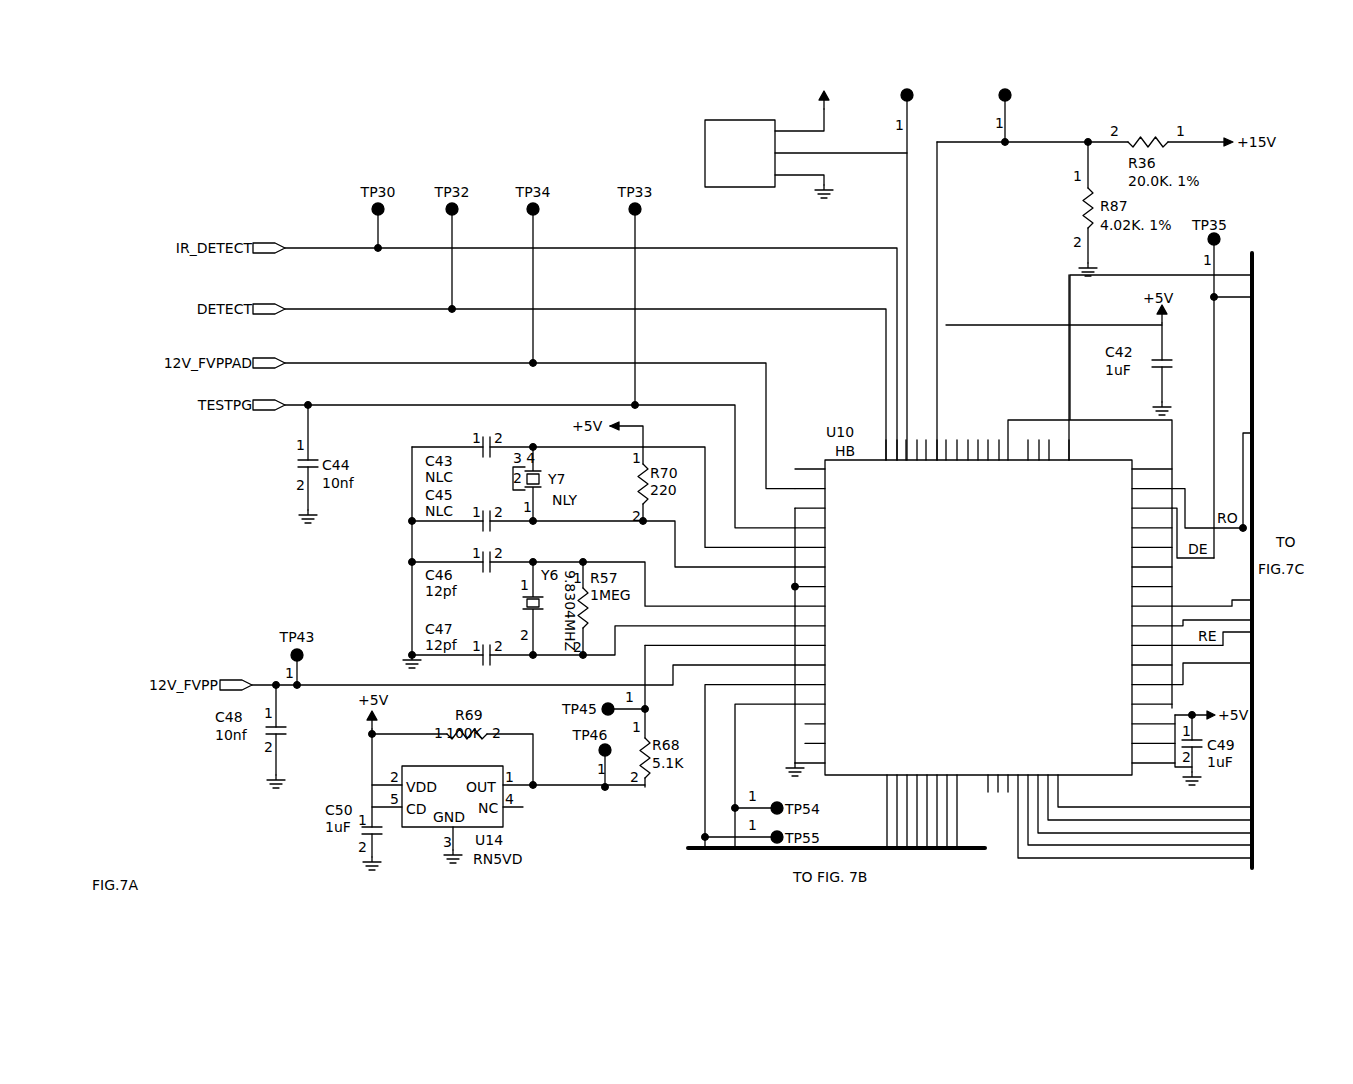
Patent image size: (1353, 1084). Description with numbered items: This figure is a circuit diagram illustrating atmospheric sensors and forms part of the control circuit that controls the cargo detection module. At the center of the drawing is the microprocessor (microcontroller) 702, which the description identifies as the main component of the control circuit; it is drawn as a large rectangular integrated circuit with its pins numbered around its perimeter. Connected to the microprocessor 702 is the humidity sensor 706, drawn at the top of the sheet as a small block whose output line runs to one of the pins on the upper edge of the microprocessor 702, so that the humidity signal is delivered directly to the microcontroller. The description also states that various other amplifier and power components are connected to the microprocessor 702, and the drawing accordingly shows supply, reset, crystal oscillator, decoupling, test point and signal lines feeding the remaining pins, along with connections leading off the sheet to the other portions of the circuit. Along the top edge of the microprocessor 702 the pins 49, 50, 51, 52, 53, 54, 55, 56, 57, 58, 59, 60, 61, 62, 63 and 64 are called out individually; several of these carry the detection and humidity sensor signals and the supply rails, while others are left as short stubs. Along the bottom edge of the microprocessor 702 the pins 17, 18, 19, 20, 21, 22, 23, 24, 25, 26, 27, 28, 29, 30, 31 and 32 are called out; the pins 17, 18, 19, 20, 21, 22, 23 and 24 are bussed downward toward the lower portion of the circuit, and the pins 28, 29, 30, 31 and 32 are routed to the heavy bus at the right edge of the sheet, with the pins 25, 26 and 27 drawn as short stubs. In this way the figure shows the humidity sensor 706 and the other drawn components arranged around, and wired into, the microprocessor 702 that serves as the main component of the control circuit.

The microprocessor (microcontroller) 702 is at (1004, 623).
The humidity sensor 706 is at (705, 146).
The microcontroller pin 17 is at (887, 787).
The microcontroller pin 18 is at (897, 805).
The microcontroller pin 19 is at (907, 823).
The microcontroller pin 20 is at (917, 841).
The microcontroller pin 21 is at (927, 787).
The microcontroller pin 22 is at (937, 805).
The microcontroller pin 23 is at (947, 823).
The microcontroller pin 24 is at (957, 841).
The microcontroller pin 25 is at (988, 792).
The microcontroller pin 26 is at (998, 792).
The microcontroller pin 27 is at (1008, 792).
The microcontroller pin 28 is at (1108, 853).
The microcontroller pin 29 is at (1140, 843).
The microcontroller pin 30 is at (1167, 831).
The microcontroller pin 31 is at (1196, 819).
The microcontroller pin 32 is at (1223, 808).
The microcontroller pin 49 is at (1069, 411).
The microcontroller pin 50 is at (1049, 440).
The microcontroller pin 51 is at (1039, 440).
The microcontroller pin 52 is at (1028, 440).
The microcontroller pin 53 is at (998, 440).
The microcontroller pin 54 is at (988, 440).
The microcontroller pin 55 is at (978, 440).
The microcontroller pin 56 is at (970, 443).
The microcontroller pin 57 is at (957, 434).
The microcontroller pin 58 is at (946, 414).
The microcontroller pin 59 is at (937, 394).
The microcontroller pin 60 is at (926, 446).
The microcontroller pin 61 is at (917, 443).
The microcontroller pin 62 is at (909, 377).
The microcontroller pin 63 is at (897, 355).
The microcontroller pin 64 is at (885, 333).